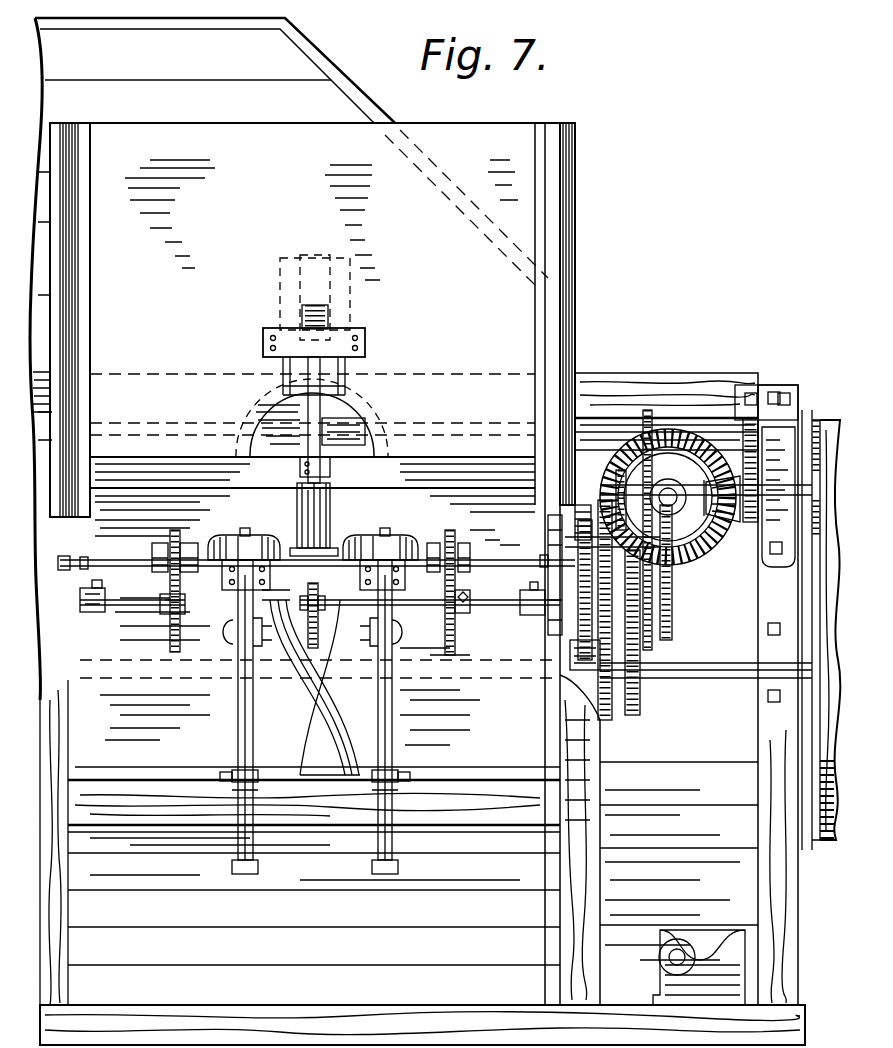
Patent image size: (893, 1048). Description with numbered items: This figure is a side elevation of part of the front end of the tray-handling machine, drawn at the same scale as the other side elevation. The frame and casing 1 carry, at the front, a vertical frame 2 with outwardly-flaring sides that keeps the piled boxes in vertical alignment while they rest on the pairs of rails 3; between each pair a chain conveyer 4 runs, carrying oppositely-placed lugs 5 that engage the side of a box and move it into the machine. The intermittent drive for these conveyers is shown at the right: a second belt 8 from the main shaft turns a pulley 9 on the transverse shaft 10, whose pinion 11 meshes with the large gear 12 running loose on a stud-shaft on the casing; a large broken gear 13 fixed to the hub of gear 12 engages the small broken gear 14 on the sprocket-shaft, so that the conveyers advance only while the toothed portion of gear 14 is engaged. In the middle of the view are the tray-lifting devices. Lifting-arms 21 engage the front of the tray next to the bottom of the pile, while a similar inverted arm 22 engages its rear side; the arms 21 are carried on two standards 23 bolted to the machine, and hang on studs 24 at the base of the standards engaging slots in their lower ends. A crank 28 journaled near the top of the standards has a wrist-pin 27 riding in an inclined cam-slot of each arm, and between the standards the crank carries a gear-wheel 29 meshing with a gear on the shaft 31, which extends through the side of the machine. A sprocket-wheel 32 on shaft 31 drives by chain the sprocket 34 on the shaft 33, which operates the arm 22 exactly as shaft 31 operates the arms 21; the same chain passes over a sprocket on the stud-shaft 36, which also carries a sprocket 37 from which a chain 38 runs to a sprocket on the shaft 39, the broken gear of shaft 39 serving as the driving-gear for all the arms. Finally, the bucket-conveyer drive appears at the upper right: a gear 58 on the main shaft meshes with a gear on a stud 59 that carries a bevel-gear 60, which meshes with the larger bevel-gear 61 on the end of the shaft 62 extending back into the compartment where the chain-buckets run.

The frame and casing 1 is at (329, 84).
The vertical frame 2 is at (312, 434).
The rails 3 is at (163, 543).
The chain conveyer 4 is at (181, 578).
The lugs 5 is at (190, 545).
The second belt 8 is at (822, 866).
The pulley 9 is at (803, 600).
The shaft 10 is at (708, 672).
The pinion 11 is at (615, 716).
The large gear 12 is at (603, 420).
The large broken gear 13 is at (575, 520).
The small broken gear 14 is at (590, 612).
The lifting-arms 21 is at (245, 718).
The lifting-arm 22 is at (322, 510).
The standards 23 is at (340, 690).
The studs 24 is at (225, 786).
The wrist-pin 27 is at (232, 633).
The crank 28 is at (255, 608).
The gear-wheel 29 is at (320, 600).
The shaft 31 is at (470, 615).
The sprocket-wheel 32 is at (646, 662).
The shaft 33 is at (648, 415).
The sprocket 34 is at (665, 505).
The stud-shaft 36 is at (585, 505).
The sprocket 37 is at (706, 548).
The chain 38 is at (668, 575).
The shaft 39 is at (660, 599).
The gear 58 is at (752, 425).
The stud 59 is at (672, 495).
The bevel-gear 60 is at (780, 420).
The bevel-gear 61 is at (722, 520).
The shaft 62 is at (662, 490).